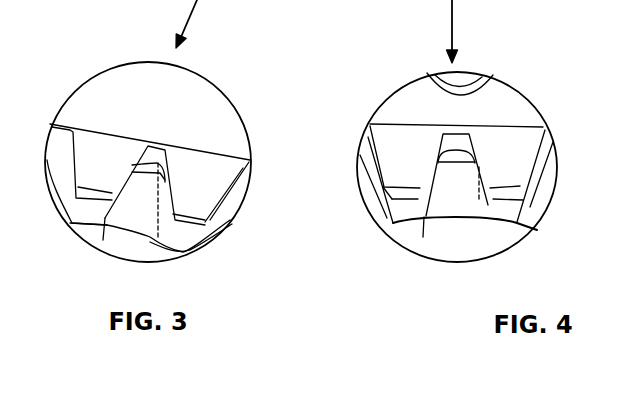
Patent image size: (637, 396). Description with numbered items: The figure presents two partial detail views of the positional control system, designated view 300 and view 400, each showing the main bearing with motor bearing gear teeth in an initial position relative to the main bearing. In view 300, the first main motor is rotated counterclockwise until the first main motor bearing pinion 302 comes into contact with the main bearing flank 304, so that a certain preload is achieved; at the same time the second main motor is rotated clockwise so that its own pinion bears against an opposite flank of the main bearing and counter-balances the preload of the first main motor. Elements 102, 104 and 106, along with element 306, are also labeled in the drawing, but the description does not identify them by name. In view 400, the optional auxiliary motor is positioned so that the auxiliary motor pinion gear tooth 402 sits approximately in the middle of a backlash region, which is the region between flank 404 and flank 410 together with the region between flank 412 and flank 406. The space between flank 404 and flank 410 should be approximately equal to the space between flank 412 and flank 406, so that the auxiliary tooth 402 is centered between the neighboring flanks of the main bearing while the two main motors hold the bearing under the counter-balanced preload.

In FIG. 3, the body 102 is at (162, 102).
In FIG. 4, the body 102 is at (400, 100).
In FIG. 4, the surface 104 is at (422, 0).
In FIG. 3, the edge 106 is at (114, 240).
In FIG. 3, the detail view 300 is at (212, 38).
In FIG. 3, the first main motor bearing pinion 302 is at (140, 207).
In FIG. 3, the main bearing flank 304 is at (146, 147).
In FIG. 3, the root 306 is at (110, 228).
In FIG. 4, the detail view 400 is at (494, 43).
In FIG. 4, the auxiliary motor pinion gear tooth 402 is at (457, 178).
In FIG. 4, the flank 404 is at (438, 173).
In FIG. 4, the flank 406 is at (477, 158).
In FIG. 4, the flank 410 is at (430, 217).
In FIG. 4, the flank 412 is at (479, 200).